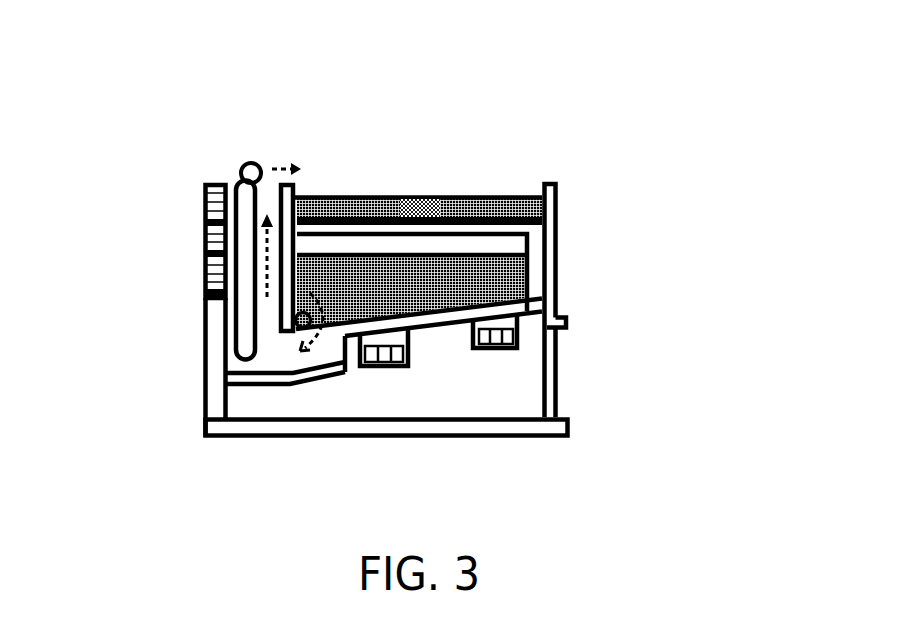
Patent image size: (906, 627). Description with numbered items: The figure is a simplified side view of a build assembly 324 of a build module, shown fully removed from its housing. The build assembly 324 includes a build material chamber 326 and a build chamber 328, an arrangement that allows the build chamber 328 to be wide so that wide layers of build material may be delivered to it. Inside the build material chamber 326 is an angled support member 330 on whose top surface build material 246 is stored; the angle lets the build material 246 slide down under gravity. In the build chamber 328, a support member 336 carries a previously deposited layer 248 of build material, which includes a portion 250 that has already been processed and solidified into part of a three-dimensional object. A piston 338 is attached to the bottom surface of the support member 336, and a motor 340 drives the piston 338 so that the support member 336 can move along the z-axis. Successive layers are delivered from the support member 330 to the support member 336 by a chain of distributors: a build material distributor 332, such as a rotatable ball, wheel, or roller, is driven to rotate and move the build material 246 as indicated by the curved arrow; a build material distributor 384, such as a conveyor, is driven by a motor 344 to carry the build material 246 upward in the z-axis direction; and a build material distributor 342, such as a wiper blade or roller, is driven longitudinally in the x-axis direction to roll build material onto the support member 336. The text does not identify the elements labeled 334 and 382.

The build assembly 324 is at (422, 82).
The build material distributor 342 is at (252, 160).
The build chamber 328 is at (350, 187).
The portion 250 is at (420, 195).
The previously deposited layer 248 is at (495, 195).
The support member 336 is at (556, 200).
The build material chamber 326 is at (510, 245).
The piston 338 is at (560, 300).
The build material 246 is at (443, 277).
The support member 330 is at (418, 327).
The heater 334 is at (385, 366).
The motor 340 is at (513, 350).
The build material distributor 332 is at (300, 333).
The motor 344 is at (203, 203).
The rack element 382 is at (203, 267).
The build material distributor 384 is at (236, 323).